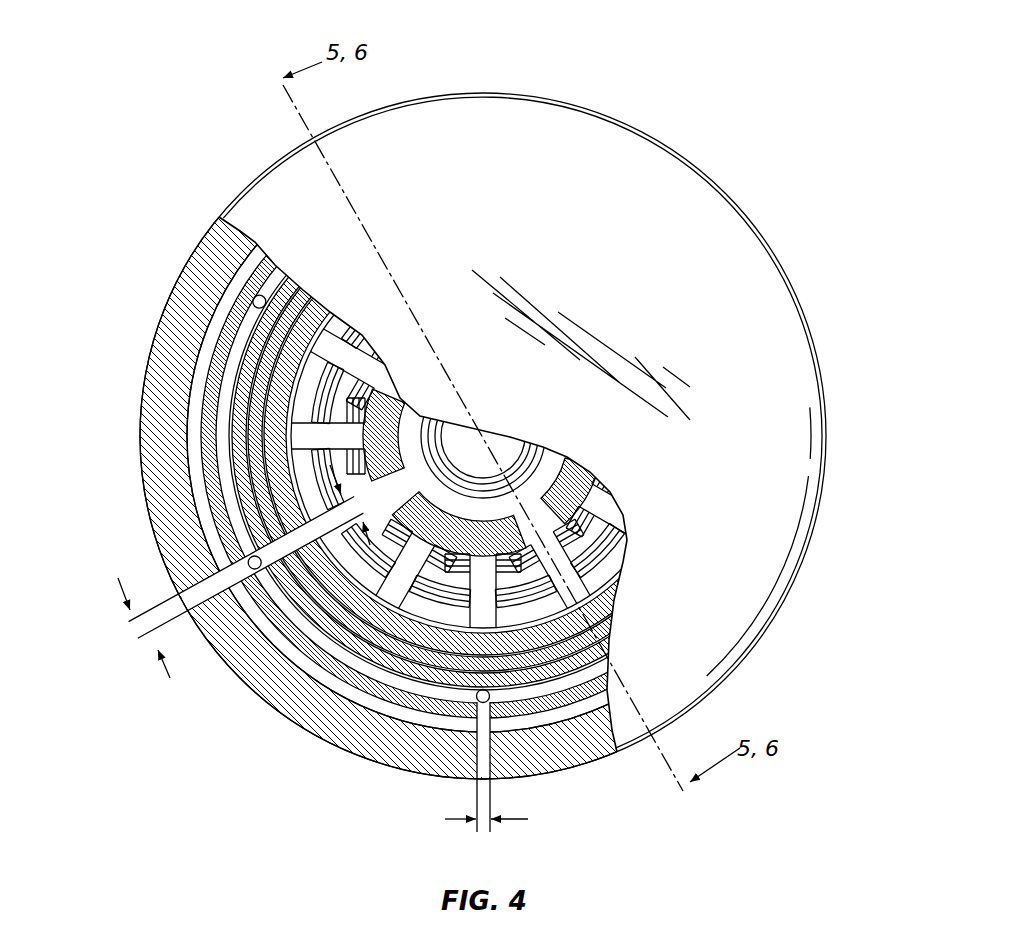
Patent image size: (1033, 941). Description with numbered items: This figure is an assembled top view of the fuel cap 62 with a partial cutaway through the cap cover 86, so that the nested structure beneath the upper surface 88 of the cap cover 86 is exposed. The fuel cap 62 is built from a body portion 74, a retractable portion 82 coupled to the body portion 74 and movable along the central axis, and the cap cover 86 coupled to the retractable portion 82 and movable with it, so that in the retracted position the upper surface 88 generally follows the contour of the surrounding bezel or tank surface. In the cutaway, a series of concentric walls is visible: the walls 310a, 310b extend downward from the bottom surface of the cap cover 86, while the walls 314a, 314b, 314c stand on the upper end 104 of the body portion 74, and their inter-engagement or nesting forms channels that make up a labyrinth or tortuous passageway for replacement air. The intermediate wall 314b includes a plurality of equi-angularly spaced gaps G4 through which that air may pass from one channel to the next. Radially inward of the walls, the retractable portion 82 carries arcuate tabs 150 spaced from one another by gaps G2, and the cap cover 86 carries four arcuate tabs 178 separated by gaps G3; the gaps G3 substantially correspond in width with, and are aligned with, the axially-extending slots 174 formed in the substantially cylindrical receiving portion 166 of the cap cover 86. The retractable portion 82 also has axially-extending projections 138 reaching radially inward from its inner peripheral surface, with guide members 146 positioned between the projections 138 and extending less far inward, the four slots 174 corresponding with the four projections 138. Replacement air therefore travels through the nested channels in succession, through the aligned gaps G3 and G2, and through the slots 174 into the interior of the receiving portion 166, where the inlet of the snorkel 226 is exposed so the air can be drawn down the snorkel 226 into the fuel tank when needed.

The fuel cap 62 is at (584, 71).
The cap cover 86 is at (680, 204).
The upper surface of the cap cover 88 is at (640, 271).
The body portion 74 is at (283, 697).
The upper end of the body portion 104 is at (230, 300).
The concentric wall 310a is at (228, 318).
The concentric wall 310b is at (240, 365).
The concentric wall 314a is at (237, 400).
The intermediate wall 314b is at (220, 433).
The concentric wall 314c is at (240, 462).
The arcuate tabs 178 is at (312, 345).
The retractable portion 82 is at (352, 345).
The arcuate tabs 150 is at (310, 413).
The slots 174 is at (406, 470).
The receiving portion 166 is at (580, 465).
The guide members 146 is at (578, 523).
The snorkel 226 is at (506, 455).
The projections 138 is at (541, 460).
The gap G2 is at (357, 505).
The gap G3 is at (240, 599).
The gaps G4 is at (506, 761).